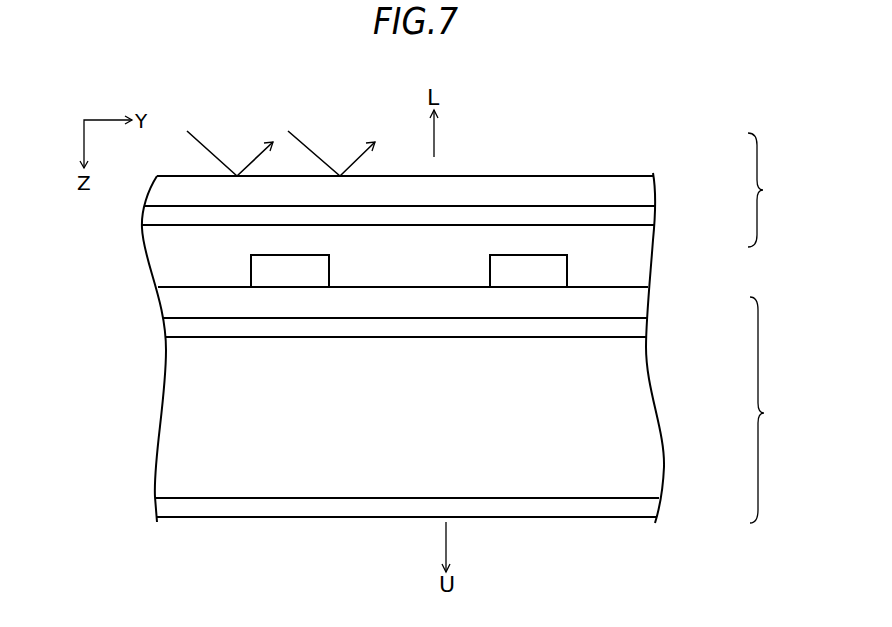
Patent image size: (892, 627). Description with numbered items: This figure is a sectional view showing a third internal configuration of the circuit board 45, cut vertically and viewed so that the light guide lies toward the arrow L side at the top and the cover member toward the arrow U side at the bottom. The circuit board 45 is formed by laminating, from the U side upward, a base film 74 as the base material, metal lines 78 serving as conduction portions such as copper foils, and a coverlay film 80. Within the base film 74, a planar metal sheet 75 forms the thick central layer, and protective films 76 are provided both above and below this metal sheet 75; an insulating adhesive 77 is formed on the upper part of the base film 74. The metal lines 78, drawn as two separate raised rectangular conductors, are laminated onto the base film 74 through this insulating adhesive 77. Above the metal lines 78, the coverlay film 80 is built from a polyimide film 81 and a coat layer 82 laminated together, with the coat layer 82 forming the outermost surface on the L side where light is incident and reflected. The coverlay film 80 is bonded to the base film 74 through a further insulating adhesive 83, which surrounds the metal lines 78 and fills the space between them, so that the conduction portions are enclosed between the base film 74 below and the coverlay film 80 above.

The circuit board 45 is at (226, 124).
The base film 74 is at (772, 410).
The metal sheet 75 is at (627, 410).
The protective film 76 is at (630, 327).
The insulating adhesive 77 is at (637, 305).
The metal line 78 is at (548, 267).
The coverlay film 80 is at (770, 190).
The polyimide film 81 is at (634, 215).
The coat layer 82 is at (628, 189).
The insulating adhesive 83 is at (628, 248).